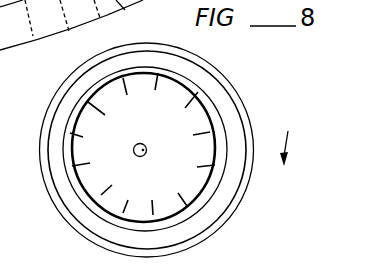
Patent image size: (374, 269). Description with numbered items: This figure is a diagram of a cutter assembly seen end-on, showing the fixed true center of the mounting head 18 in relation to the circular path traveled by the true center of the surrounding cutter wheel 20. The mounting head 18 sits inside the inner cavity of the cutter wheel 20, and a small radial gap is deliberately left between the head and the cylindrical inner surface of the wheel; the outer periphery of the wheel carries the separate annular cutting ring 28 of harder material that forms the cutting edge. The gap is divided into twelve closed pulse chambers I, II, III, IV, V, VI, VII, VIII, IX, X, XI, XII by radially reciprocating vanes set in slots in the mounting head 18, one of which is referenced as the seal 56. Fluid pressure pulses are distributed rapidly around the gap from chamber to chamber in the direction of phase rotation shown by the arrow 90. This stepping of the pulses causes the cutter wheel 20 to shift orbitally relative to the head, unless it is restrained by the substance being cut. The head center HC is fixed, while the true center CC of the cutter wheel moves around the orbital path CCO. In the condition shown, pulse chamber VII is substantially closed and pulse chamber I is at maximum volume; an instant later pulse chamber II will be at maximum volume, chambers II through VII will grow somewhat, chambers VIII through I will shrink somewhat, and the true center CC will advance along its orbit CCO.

The mounting head 18 is at (128, 194).
The cutter wheel 20 is at (219, 88).
The annular cutting ring 28 is at (251, 106).
The seal 56 is at (127, 92).
The arrow 90 is at (289, 140).
The head center HC is at (134, 151).
The true center of the cutter wheel CC is at (146, 150).
The orbital path of the true center of the cutter wheel CCO is at (146, 155).
The pulse chamber I is at (216, 148).
The pulse chamber II is at (212, 192).
The pulse chamber III is at (190, 212).
The pulse chamber IV is at (140, 224).
The pulse chamber V is at (100, 210).
The pulse chamber VI is at (77, 187).
The pulse chamber VII is at (67, 151).
The pulse chamber VIII is at (77, 115).
The pulse chamber IX is at (110, 82).
The pulse chamber X is at (147, 72).
The pulse chamber XI is at (184, 84).
The pulse chamber XII is at (218, 114).